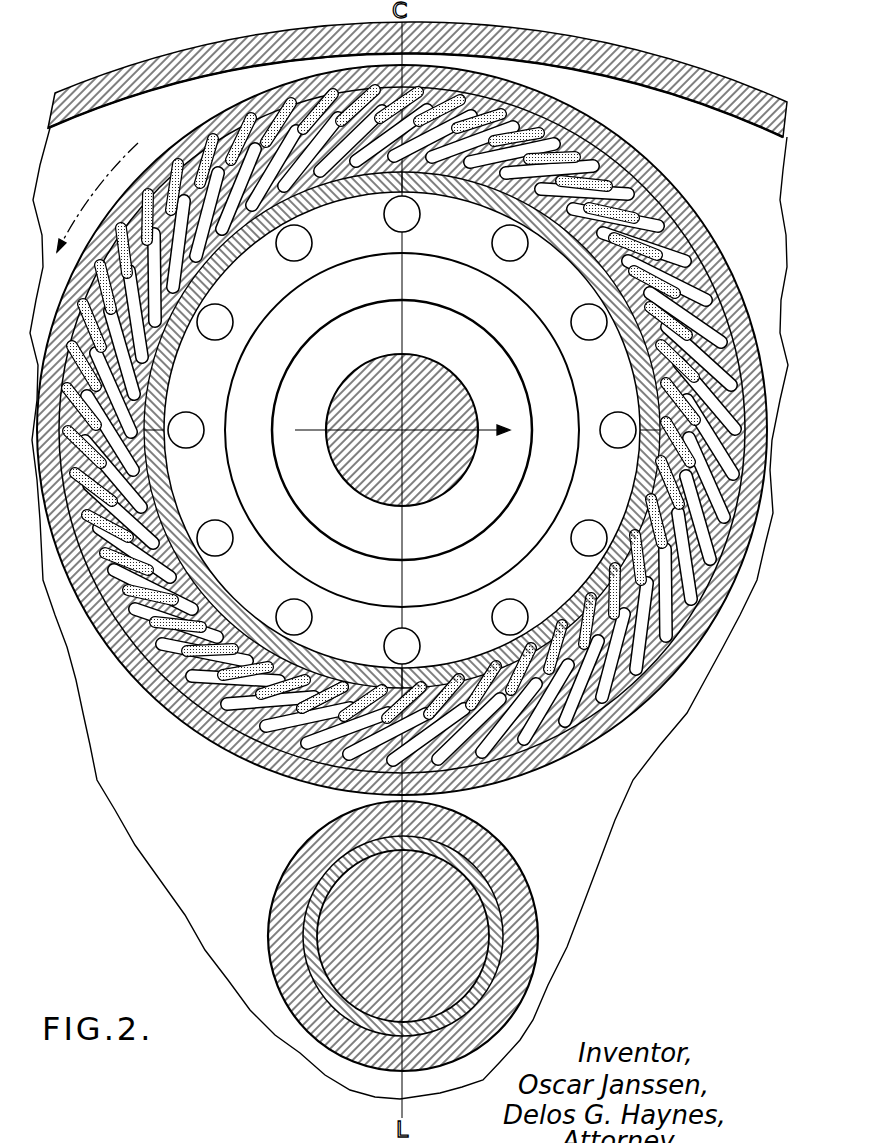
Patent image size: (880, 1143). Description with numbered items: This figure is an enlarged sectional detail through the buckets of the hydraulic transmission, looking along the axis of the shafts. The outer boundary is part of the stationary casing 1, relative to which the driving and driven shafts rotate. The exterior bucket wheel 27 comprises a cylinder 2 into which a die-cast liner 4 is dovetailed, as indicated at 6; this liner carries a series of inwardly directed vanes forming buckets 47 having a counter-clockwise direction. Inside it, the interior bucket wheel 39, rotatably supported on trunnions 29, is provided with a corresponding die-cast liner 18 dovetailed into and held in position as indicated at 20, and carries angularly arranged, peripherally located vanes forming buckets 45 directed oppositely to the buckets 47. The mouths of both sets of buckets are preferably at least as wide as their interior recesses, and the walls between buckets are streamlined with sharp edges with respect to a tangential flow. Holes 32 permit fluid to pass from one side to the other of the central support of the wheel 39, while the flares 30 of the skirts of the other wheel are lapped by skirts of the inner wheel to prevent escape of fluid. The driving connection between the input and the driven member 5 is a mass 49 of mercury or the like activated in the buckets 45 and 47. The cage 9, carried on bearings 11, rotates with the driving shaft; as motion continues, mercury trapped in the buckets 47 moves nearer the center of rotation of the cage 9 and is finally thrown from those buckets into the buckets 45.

The stationary casing 1 is at (128, 85).
The cylinder 2 is at (678, 202).
The die-cast liner 4 is at (135, 190).
The driven member 5 is at (466, 920).
The dovetail 6 is at (215, 125).
The cage 9 is at (507, 850).
The bearings 11 is at (520, 915).
The die-cast liner 18 is at (158, 512).
The dovetail 20 is at (614, 567).
The exterior bucket wheel 27 is at (699, 652).
The trunnions 29 is at (458, 410).
The flares 30 is at (552, 397).
The holes 32 is at (492, 245).
The interior bucket wheel 39 is at (165, 470).
The buckets 45 is at (313, 678).
The buckets 47 is at (272, 745).
The mass of mercury 49 is at (140, 660).